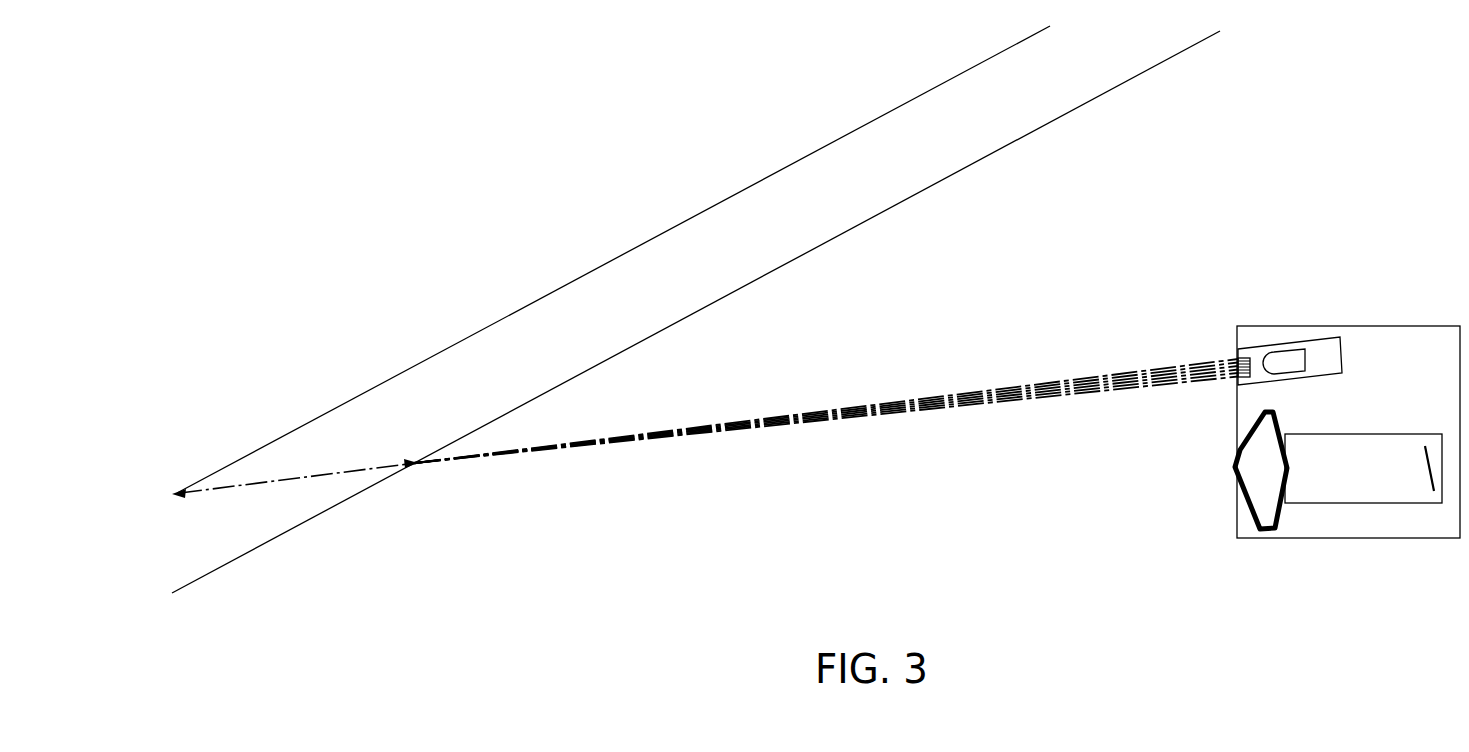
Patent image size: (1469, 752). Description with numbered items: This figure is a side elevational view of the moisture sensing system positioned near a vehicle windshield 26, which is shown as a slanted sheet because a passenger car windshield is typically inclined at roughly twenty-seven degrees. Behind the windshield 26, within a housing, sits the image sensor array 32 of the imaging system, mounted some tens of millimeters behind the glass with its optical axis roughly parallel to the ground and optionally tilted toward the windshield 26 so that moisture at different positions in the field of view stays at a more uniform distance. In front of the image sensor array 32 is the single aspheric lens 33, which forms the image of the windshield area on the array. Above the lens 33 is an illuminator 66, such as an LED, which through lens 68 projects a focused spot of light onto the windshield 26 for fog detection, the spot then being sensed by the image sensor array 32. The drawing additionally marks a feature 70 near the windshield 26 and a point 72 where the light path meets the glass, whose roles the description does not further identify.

The windshield 26 is at (738, 193).
The image sensor array 32 is at (1433, 489).
The aspheric lens 33 is at (1241, 512).
The illuminator 66 is at (1293, 365).
The lens 68 is at (1237, 375).
The reflection distance arrow 70 is at (178, 495).
The incidence point 72 is at (413, 466).